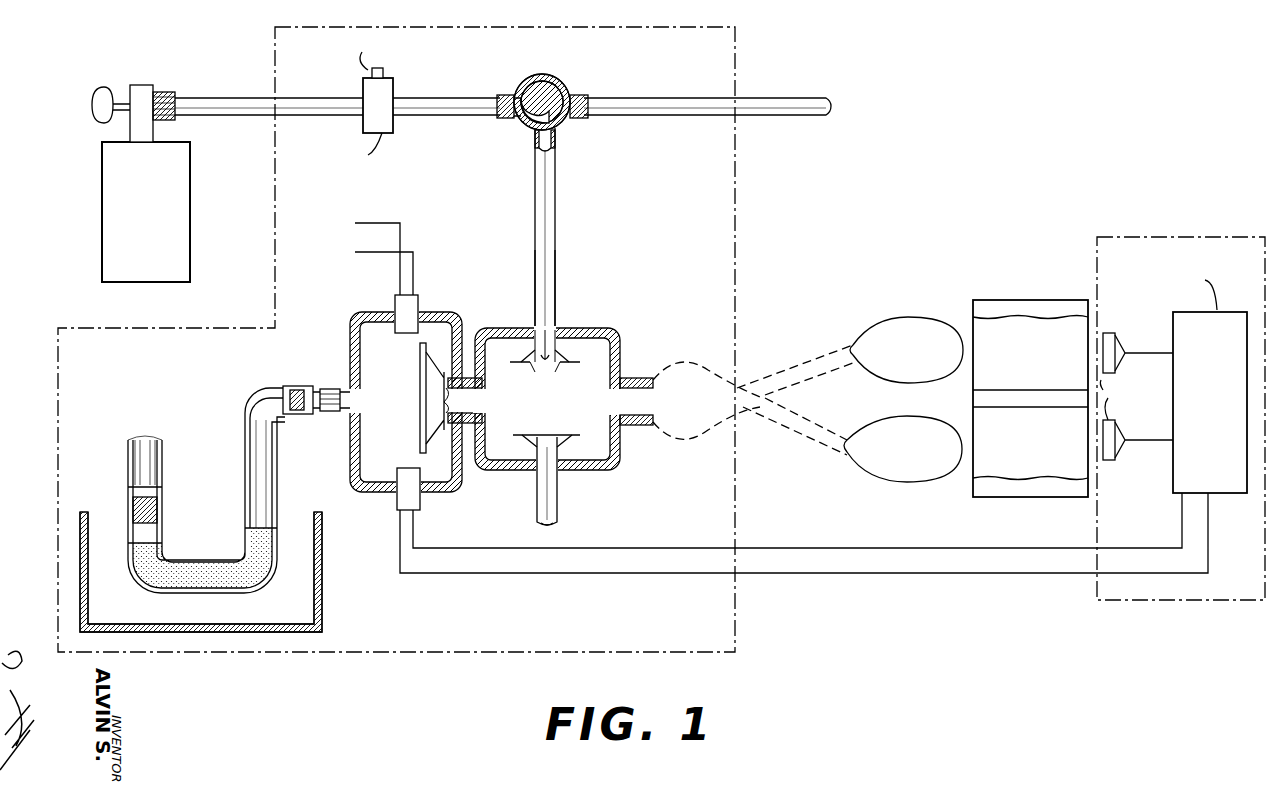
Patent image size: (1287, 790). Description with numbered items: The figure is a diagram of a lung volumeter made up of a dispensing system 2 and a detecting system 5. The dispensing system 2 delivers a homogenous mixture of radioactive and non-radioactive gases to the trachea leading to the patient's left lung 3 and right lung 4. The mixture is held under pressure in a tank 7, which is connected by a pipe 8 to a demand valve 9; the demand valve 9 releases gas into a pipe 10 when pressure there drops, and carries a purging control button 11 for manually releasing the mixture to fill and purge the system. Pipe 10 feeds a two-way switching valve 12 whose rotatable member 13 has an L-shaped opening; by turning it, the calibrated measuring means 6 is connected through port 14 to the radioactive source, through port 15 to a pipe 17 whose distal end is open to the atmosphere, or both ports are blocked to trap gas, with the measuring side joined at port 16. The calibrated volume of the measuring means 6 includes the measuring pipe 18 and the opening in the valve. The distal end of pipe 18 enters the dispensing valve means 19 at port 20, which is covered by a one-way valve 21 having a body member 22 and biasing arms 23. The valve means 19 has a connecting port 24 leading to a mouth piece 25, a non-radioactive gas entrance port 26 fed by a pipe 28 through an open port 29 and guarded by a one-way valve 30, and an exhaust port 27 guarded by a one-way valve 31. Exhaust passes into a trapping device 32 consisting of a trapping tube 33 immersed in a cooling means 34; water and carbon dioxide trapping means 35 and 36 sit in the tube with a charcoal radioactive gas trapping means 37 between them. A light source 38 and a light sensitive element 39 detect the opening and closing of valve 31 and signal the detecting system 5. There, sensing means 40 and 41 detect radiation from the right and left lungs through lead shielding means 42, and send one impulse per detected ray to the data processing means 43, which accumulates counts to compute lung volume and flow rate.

The dispensing system 2 is at (372, 656).
The left lung 3 is at (885, 482).
The right lung 4 is at (912, 318).
The detecting system 5 is at (1180, 602).
The calibrated measuring means 6 is at (560, 210).
The tank 7 is at (102, 207).
The pipe 8 is at (220, 98).
The demand valve 9 is at (360, 120).
The pipe 10 is at (452, 117).
The purging control button 11 is at (384, 68).
The two-way switching valve 12 is at (547, 94).
The rotatable member 13 is at (530, 92).
The port 14 is at (515, 120).
The port 15 is at (566, 99).
The port 16 is at (556, 145).
The pipe 17 is at (793, 100).
The measuring pipe 18 is at (557, 250).
The dispensing valve means 19 is at (622, 468).
The port 20 is at (553, 328).
The one-way valve 21 is at (530, 370).
The body member 22 is at (563, 370).
The biasing arms 23 is at (522, 356).
The connecting port 24 is at (631, 380).
The mouth piece 25 is at (648, 427).
The non-radioactive gas entrance port 26 is at (540, 464).
The exhaust port 27 is at (460, 398).
The pipe 28 is at (559, 492).
The open port 29 is at (543, 526).
The one-way valve 30 is at (560, 432).
The one-way valve 31 is at (418, 372).
The trapping device 32 is at (110, 498).
The trapping tube 33 is at (245, 432).
The cooling means 34 is at (80, 530).
The water and carbon dioxide trapping means 35 is at (295, 386).
The water and carbon dioxide trapping means 36 is at (157, 510).
The radioactive gas trapping means 37 is at (250, 580).
The light source 38 is at (418, 300).
The light sensitive element 39 is at (398, 500).
The sensing means 40 is at (1118, 344).
The sensing means 41 is at (1118, 460).
The lead shielding means 42 is at (1004, 300).
The data processing means 43 is at (1232, 493).